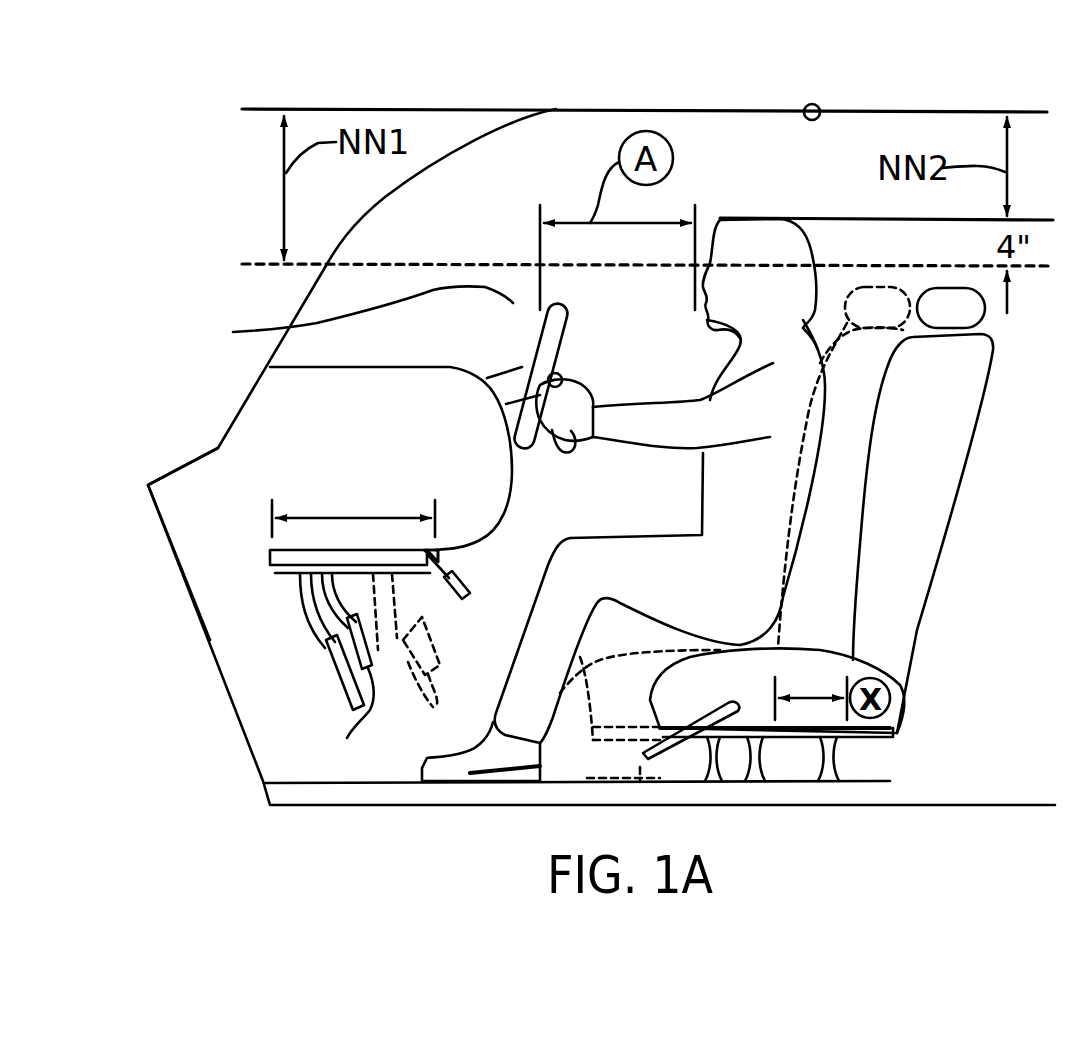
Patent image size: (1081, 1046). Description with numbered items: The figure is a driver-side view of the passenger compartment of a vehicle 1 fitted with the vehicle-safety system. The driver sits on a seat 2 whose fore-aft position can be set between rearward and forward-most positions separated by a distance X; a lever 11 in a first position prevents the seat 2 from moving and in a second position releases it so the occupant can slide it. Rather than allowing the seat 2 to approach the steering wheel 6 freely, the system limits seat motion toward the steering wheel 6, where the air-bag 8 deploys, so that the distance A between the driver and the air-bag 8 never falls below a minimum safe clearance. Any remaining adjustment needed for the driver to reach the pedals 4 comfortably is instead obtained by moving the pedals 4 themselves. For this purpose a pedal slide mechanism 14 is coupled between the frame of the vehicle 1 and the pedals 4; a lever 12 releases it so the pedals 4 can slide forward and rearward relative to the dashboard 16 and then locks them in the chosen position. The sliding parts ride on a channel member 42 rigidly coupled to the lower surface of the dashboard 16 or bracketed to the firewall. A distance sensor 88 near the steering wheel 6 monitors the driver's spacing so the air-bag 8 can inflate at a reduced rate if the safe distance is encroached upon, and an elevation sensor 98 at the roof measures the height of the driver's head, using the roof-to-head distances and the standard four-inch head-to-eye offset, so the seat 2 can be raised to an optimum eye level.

The vehicle 1 is at (176, 731).
The seat 2 is at (933, 517).
The pedals 4 is at (352, 703).
The steering wheel 6 is at (362, 319).
The air-bag 8 is at (557, 377).
The lever 11 is at (665, 753).
The lever 12 is at (468, 578).
The pedal slide mechanism 14 is at (247, 585).
The dashboard 16 is at (510, 477).
The channel member 42 is at (270, 561).
The distance sensor 88 is at (562, 376).
The elevation sensor 98 is at (819, 107).